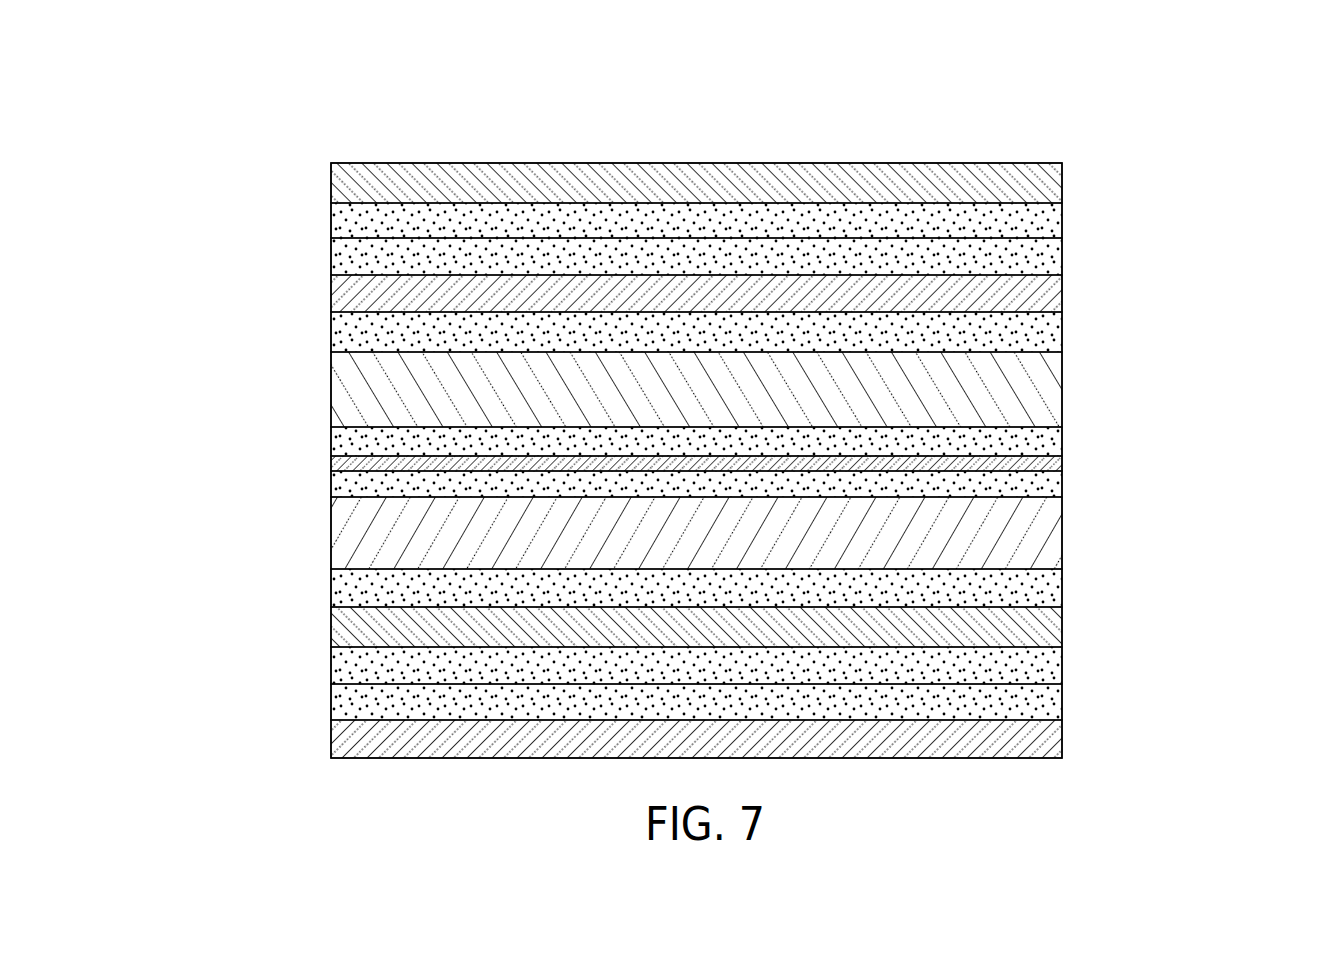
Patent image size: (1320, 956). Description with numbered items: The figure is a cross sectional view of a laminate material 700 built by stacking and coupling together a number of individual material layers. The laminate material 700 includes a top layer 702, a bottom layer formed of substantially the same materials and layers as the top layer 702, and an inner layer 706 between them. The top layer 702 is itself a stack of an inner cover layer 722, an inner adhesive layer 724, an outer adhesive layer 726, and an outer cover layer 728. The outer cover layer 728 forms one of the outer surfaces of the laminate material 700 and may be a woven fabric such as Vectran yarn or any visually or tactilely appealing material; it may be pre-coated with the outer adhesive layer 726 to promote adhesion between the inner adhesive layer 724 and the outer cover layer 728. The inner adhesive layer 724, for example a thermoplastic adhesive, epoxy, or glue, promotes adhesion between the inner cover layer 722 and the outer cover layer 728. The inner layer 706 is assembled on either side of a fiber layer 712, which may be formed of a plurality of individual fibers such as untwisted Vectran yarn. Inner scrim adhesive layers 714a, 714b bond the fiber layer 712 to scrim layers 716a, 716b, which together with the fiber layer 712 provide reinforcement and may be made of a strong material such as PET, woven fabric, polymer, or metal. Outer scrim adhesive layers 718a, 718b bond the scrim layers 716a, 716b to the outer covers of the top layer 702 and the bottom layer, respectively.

The laminate material 700 is at (466, 126).
The top layer 702 is at (1205, 126).
The inner layer 706 is at (183, 300).
The fiber layer 712 is at (1062, 465).
The inner scrim adhesive layer 714a is at (330, 445).
The inner scrim adhesive layer 714b is at (330, 487).
The scrim layer 716a is at (330, 392).
The scrim layer 716b is at (330, 533).
The outer scrim adhesive layer 718a is at (330, 332).
The outer scrim adhesive layer 718b is at (330, 588).
The inner cover layer 722 is at (1062, 290).
The inner adhesive layer 724 is at (1062, 254).
The outer adhesive layer 726 is at (1062, 218).
The outer cover layer 728 is at (1062, 184).